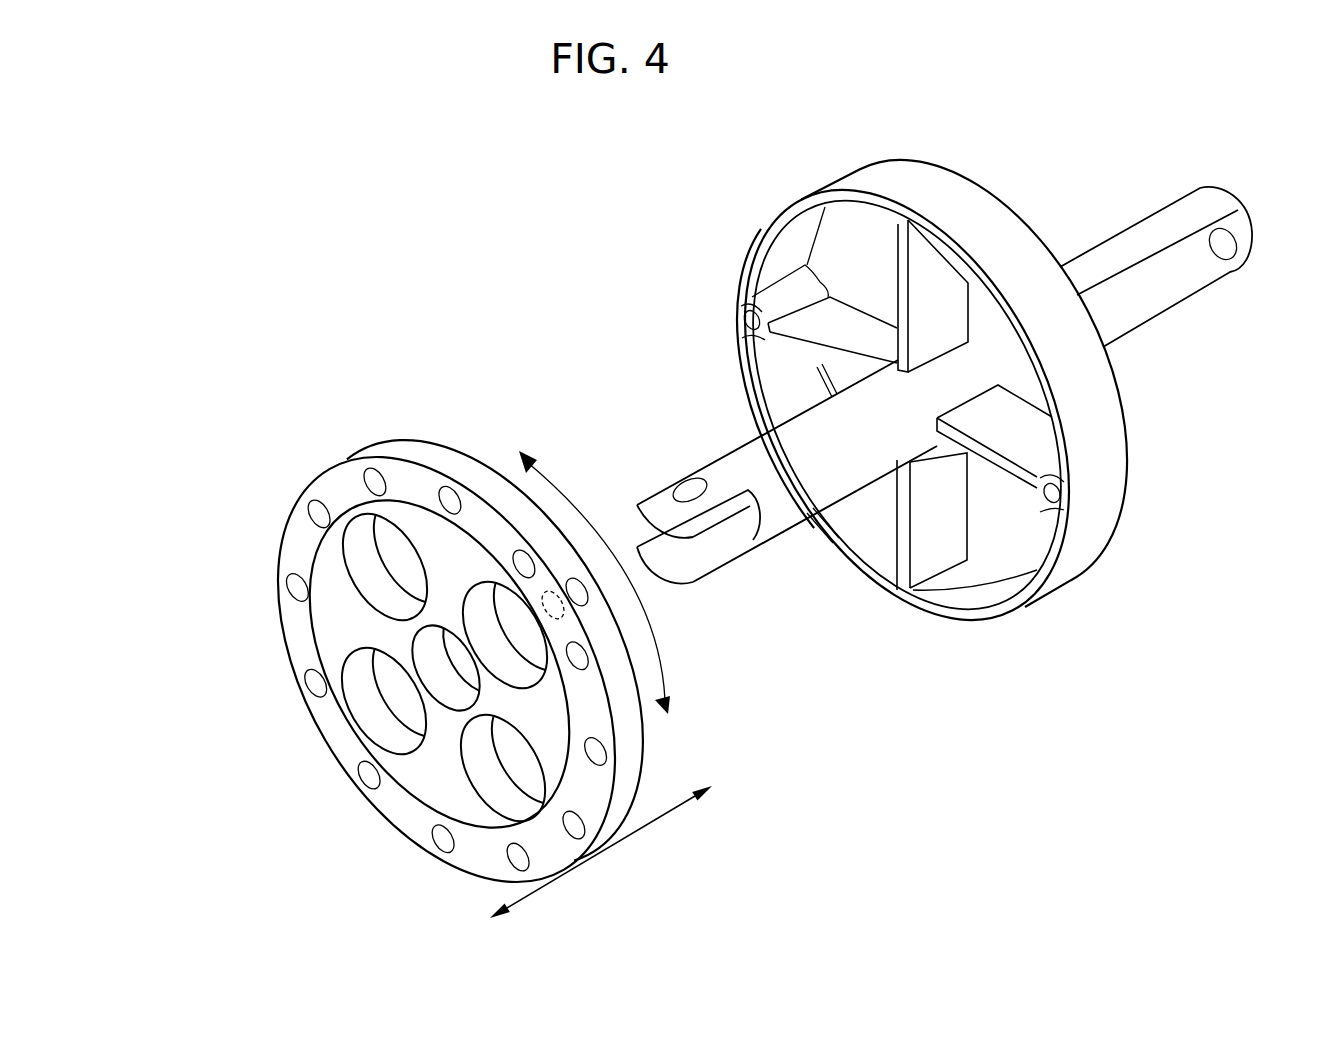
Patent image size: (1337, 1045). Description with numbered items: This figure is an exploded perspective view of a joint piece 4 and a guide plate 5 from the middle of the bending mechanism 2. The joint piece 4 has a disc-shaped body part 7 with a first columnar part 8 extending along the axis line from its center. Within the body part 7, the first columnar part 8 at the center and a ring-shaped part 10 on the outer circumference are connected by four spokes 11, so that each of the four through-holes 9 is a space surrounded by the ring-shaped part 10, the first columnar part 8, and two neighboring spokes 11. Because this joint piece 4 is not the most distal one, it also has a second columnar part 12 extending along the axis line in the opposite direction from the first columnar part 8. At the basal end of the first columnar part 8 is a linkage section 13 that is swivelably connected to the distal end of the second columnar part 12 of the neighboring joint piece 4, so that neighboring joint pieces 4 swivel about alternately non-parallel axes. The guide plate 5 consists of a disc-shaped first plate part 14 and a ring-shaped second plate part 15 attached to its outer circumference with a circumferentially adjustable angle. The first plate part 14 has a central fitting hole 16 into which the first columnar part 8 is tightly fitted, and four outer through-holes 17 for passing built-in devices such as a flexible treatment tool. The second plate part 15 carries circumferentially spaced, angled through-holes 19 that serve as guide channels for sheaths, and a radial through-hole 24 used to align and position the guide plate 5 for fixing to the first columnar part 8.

The assembly 2 is at (1276, 110).
The joint piece 4 is at (1040, 150).
The guide plate 5 is at (427, 385).
The body part 7 is at (1115, 367).
The first columnar part 8 is at (835, 460).
The through-hole 9 is at (787, 245).
The ring-shaped part 10 is at (1108, 472).
The spoke 11 is at (905, 245).
The second columnar part 12 is at (1163, 215).
The linkage section 13 is at (640, 440).
The first plate part 14 is at (418, 778).
The second plate part 15 is at (475, 852).
The fitting hole 16 is at (430, 652).
The through-hole 17 is at (375, 712).
The through-hole 19 is at (297, 580).
The through-hole 24 is at (582, 600).